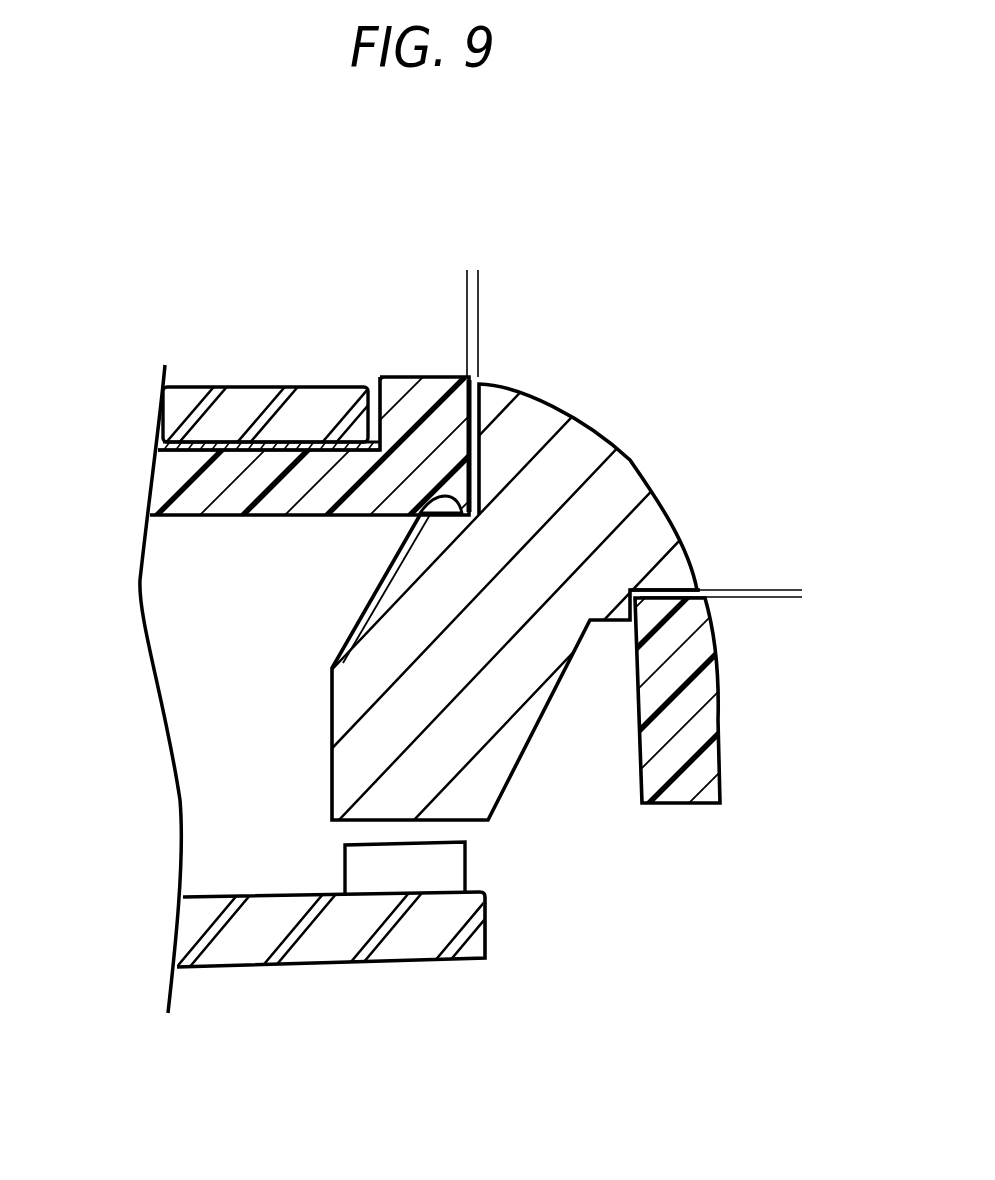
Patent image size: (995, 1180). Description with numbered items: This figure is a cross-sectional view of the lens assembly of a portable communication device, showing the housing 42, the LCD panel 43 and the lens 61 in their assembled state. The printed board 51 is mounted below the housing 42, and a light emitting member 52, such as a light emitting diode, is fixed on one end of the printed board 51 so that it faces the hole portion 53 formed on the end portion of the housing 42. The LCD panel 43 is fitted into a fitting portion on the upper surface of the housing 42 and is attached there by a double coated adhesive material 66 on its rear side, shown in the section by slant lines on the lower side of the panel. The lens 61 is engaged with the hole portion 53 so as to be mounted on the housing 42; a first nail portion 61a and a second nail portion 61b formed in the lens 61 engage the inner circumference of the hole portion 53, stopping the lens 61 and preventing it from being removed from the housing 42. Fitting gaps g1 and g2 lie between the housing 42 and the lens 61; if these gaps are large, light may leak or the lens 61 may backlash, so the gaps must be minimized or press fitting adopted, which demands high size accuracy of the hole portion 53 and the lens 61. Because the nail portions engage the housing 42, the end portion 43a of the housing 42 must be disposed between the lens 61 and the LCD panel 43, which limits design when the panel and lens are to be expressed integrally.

The housing 42 is at (720, 753).
The LCD panel 43 is at (238, 392).
The end portion 43a is at (413, 377).
The printed board 51 is at (497, 937).
The light emitting member 52 is at (455, 857).
The hole portion 53 is at (597, 675).
The lens 61 is at (602, 446).
The first nail portion 61a is at (655, 590).
The second nail portion 61b is at (420, 520).
The double coated adhesive material 66 is at (168, 446).
The fitting gap g1 is at (525, 280).
The fitting gap g2 is at (785, 535).